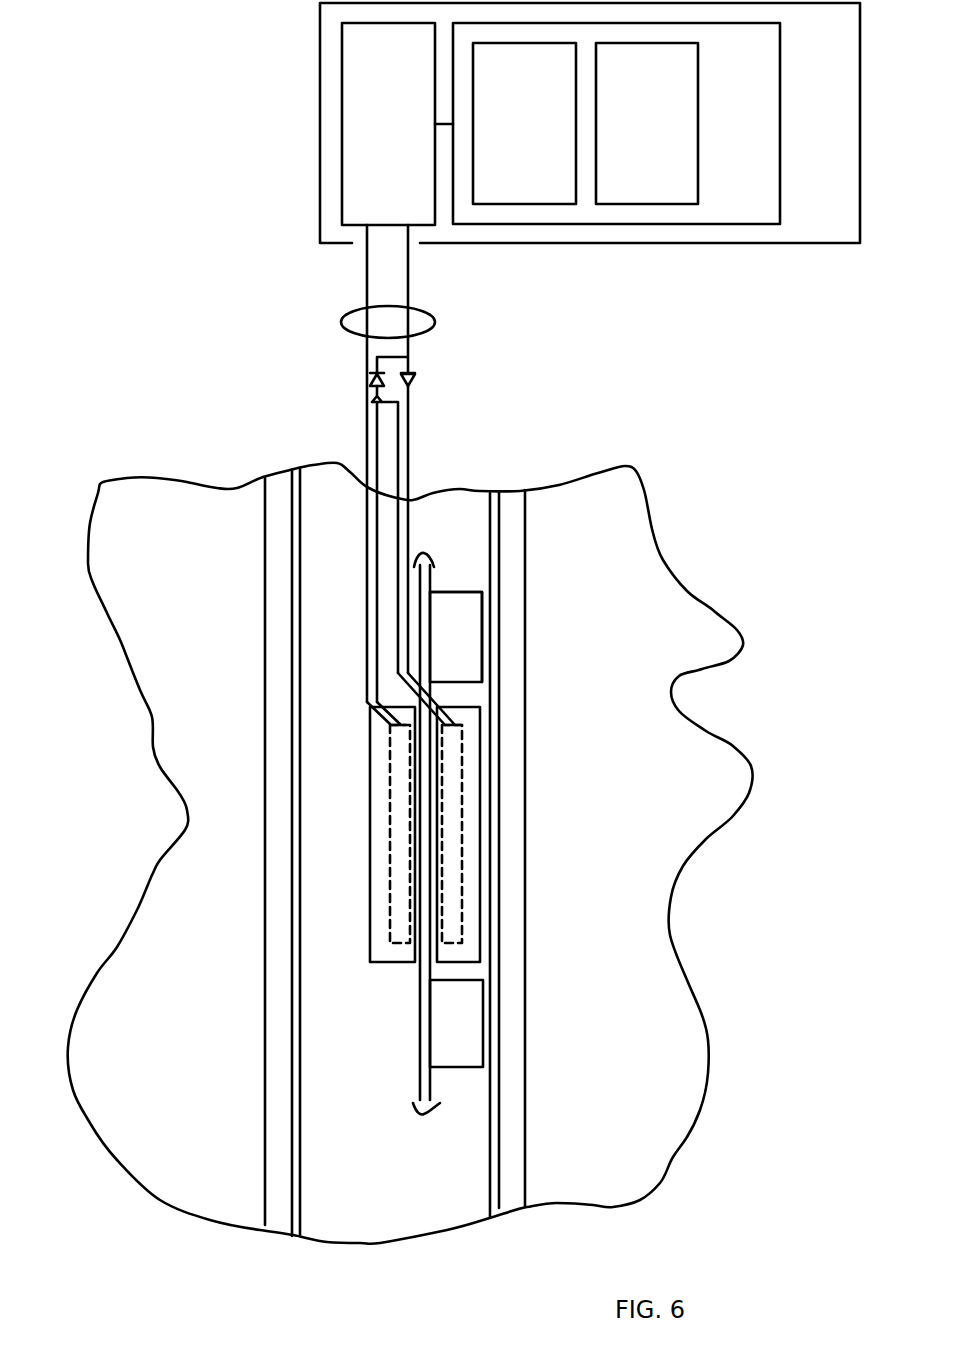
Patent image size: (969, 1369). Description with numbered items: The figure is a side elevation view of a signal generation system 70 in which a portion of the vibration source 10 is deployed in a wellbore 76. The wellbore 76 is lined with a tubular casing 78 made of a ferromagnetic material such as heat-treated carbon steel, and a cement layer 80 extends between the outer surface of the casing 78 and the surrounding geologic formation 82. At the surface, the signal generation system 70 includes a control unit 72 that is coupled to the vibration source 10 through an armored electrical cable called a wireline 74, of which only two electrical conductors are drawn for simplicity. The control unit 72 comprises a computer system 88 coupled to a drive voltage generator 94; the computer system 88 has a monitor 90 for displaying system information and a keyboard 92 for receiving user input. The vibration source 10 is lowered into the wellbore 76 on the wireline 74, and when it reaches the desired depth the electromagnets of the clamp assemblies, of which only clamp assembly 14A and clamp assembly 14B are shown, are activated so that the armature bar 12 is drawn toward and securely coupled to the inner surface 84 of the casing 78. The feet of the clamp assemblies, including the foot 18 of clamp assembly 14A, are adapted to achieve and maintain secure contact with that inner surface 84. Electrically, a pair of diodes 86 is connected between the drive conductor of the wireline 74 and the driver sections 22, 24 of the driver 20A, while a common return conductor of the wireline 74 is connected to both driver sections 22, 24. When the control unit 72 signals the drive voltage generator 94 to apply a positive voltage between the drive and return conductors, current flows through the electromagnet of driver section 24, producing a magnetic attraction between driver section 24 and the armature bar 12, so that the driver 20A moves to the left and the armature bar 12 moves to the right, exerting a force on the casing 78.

The vibration source 10 is at (491, 736).
The armature bar 12 is at (420, 1008).
The clamp assembly 14A is at (499, 637).
The clamp assembly 14B is at (490, 1025).
The foot 18 is at (483, 592).
The driver 20A is at (491, 800).
The driver section 22 is at (370, 833).
The driver section 24 is at (480, 836).
The signal generation system 70 is at (468, 123).
The control unit 72 is at (590, 123).
The wireline 74 is at (348, 326).
The wellbore 76 is at (343, 498).
The casing 78 is at (296, 468).
The cement layer 80 is at (278, 468).
The geologic formation 82 is at (154, 541).
The inner surface 84 is at (490, 507).
The pair of diodes 86 is at (450, 369).
The computer system 88 is at (607, 123).
The monitor 90 is at (636, 138).
The keyboard 92 is at (509, 138).
The drive voltage generator 94 is at (373, 138).